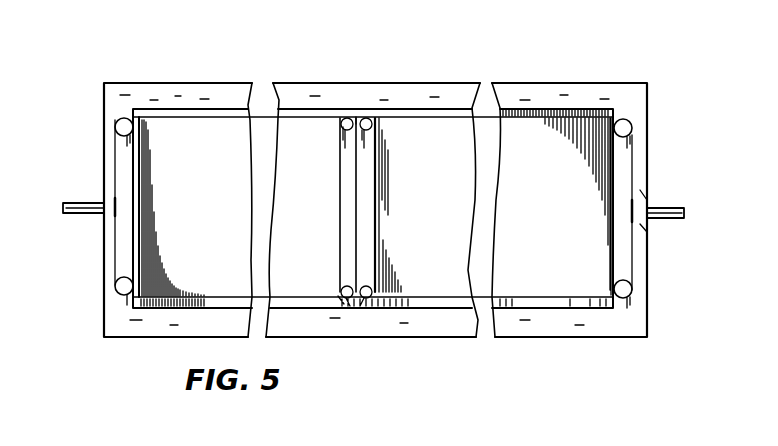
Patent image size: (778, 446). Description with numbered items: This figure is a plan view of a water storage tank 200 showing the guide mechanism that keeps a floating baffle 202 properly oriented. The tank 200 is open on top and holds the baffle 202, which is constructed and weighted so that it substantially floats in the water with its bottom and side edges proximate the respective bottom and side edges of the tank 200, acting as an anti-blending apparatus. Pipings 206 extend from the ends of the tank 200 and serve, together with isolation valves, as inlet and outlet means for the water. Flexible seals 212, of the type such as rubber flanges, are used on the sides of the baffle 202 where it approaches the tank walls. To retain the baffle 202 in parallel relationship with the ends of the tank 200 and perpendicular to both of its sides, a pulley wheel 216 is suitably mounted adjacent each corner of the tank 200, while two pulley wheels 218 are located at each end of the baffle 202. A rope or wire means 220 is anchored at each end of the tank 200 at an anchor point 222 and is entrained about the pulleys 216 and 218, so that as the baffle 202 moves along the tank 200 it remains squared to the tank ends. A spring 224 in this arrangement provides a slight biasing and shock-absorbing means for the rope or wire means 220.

The tank 200 is at (400, 62).
The floating baffle 202 is at (379, 212).
The pipings 206 is at (80, 204).
The seals 212 is at (381, 122).
The pulley wheel 216 is at (117, 128).
The pulley wheels 218 is at (357, 116).
The rope or wire means 220 is at (556, 116).
The anchor 222 is at (115, 214).
The spring 224 is at (641, 221).